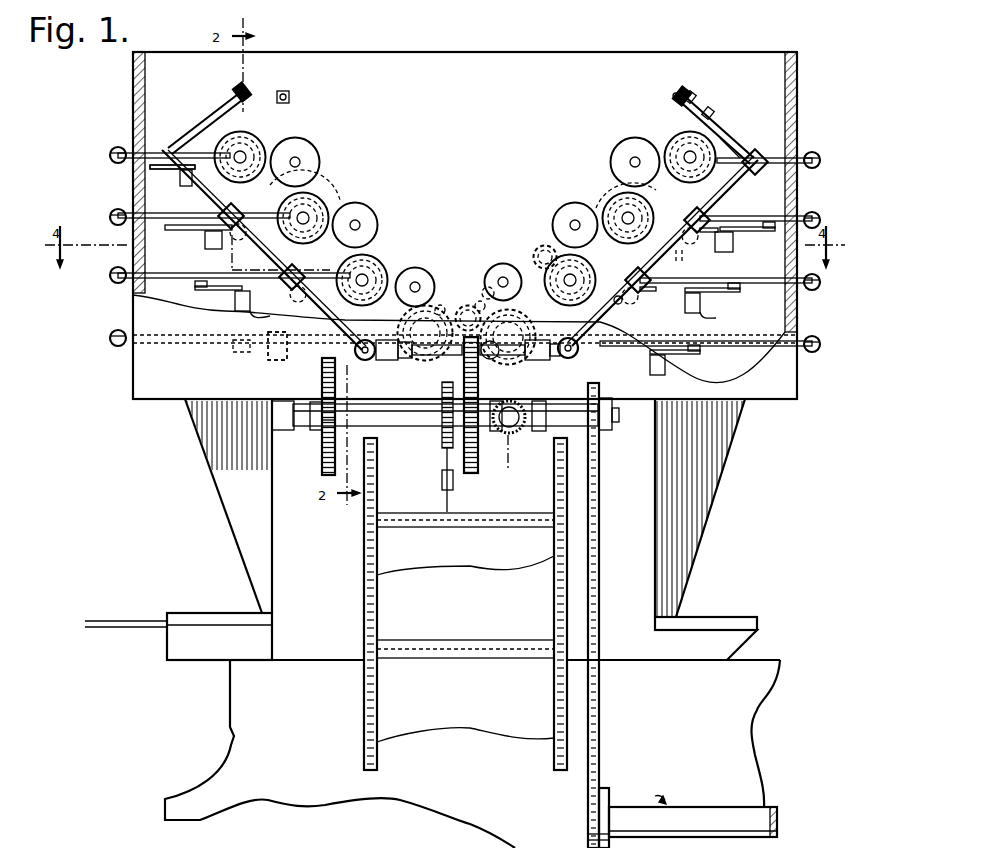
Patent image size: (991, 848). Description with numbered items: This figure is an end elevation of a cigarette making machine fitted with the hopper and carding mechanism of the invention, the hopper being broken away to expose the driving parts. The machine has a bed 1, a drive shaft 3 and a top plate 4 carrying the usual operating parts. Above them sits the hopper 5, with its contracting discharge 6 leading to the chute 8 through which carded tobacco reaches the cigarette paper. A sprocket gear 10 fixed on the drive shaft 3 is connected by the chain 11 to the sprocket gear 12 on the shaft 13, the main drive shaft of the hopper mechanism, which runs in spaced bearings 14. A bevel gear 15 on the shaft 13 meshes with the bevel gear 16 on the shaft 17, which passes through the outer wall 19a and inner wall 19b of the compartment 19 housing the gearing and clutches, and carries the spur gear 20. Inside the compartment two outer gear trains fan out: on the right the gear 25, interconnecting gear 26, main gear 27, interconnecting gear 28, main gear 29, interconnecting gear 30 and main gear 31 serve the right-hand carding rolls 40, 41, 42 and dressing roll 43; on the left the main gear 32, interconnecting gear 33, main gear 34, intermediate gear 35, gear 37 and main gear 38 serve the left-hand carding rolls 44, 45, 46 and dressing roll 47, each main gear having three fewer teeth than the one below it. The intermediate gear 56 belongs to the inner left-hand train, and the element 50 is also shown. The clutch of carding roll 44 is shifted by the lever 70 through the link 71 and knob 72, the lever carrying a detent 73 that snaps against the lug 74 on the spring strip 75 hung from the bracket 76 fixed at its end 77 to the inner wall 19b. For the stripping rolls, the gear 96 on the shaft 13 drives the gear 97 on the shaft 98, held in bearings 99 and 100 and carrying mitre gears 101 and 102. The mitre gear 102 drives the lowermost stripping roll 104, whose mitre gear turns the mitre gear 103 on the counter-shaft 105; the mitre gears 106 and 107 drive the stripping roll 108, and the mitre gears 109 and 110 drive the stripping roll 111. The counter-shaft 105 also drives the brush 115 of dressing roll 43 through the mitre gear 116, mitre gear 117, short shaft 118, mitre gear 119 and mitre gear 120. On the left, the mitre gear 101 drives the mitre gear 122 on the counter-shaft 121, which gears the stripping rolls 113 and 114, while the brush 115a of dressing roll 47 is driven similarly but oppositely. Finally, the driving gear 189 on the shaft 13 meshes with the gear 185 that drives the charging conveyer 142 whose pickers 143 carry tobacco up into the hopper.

The bed 1 is at (226, 763).
The drive shaft 3 is at (695, 806).
The top plate 4 is at (762, 660).
The hopper 5 is at (133, 383).
The contracting discharge 6 is at (218, 466).
The chute 8 is at (212, 662).
The sprocket gear 10 is at (609, 806).
The chain 11 is at (600, 616).
The sprocket gear 12 is at (619, 418).
The shaft 13 is at (403, 426).
The bearing 14 is at (272, 446).
The bevel gear 15 is at (518, 432).
The bevel gear 16 is at (512, 428).
The shaft 17 is at (504, 450).
The compartment 19 is at (465, 225).
The outer wall 19a is at (175, 399).
The inner wall 19b is at (545, 62).
The spur gear 20 is at (514, 468).
The gear 25 is at (480, 302).
The interconnecting gear 26 is at (505, 265).
The main gear 27 is at (548, 268).
The interconnecting gear 28 is at (568, 210).
The main gear 29 is at (612, 196).
The interconnecting gear 30 is at (622, 150).
The main gear 31 is at (712, 180).
The main gear 32 is at (442, 305).
The interconnecting gear 33 is at (430, 270).
The main gear 34 is at (390, 263).
The intermediate gear 35 is at (372, 212).
The interconnecting gear 37 is at (312, 156).
The main gear 38 is at (266, 142).
The carding roll 40 is at (488, 286).
The carding roll 41 is at (545, 248).
The carding roll 42 is at (600, 202).
The dressing roll 43 is at (660, 132).
The carding roll 44 is at (468, 312).
The carding roll 45 is at (380, 240).
The carding roll 46 is at (322, 186).
The dressing roll 47 is at (286, 102).
The gear 50 is at (492, 358).
The intermediate gear 56 is at (325, 200).
The lever 70 is at (140, 152).
The link 71 is at (110, 160).
The knob 72 is at (110, 150).
The detent 73 is at (196, 288).
The lug 74 is at (202, 292).
The spring strip 75 is at (242, 300).
The bracket 76 is at (240, 282).
The end 77 is at (258, 316).
The gear 96 is at (464, 456).
The gear 97 is at (445, 355).
The shaft 98 is at (410, 360).
The bearing 99 is at (388, 360).
The bearing 100 is at (540, 362).
The mitre gear 101 is at (365, 362).
The mitre gear 102 is at (522, 328).
The mitre gear 103 is at (580, 348).
The stripping roll 104 is at (568, 358).
The counter-shaft 105 is at (604, 318).
The mitre gear 106 is at (640, 292).
The mitre gear 107 is at (616, 304).
The stripping roll 108 is at (636, 254).
The mitre gear 109 is at (700, 208).
The mitre gear 110 is at (693, 238).
The stripping roll 111 is at (680, 258).
The stripping roll 113 is at (318, 268).
The stripping roll 114 is at (258, 210).
The brush 115 is at (686, 82).
The brush 115a is at (236, 86).
The mitre gear 116 is at (788, 188).
The mitre gear 117 is at (748, 150).
The short shaft 118 is at (720, 122).
The mitre gear 119 is at (672, 92).
The mitre gear 120 is at (696, 100).
The counter-shaft 121 is at (330, 317).
The mitre gear 122 is at (356, 350).
The conveyer 142 is at (364, 614).
The pickers 143 is at (520, 528).
The gear 185 is at (322, 378).
The driving gear 189 is at (322, 448).